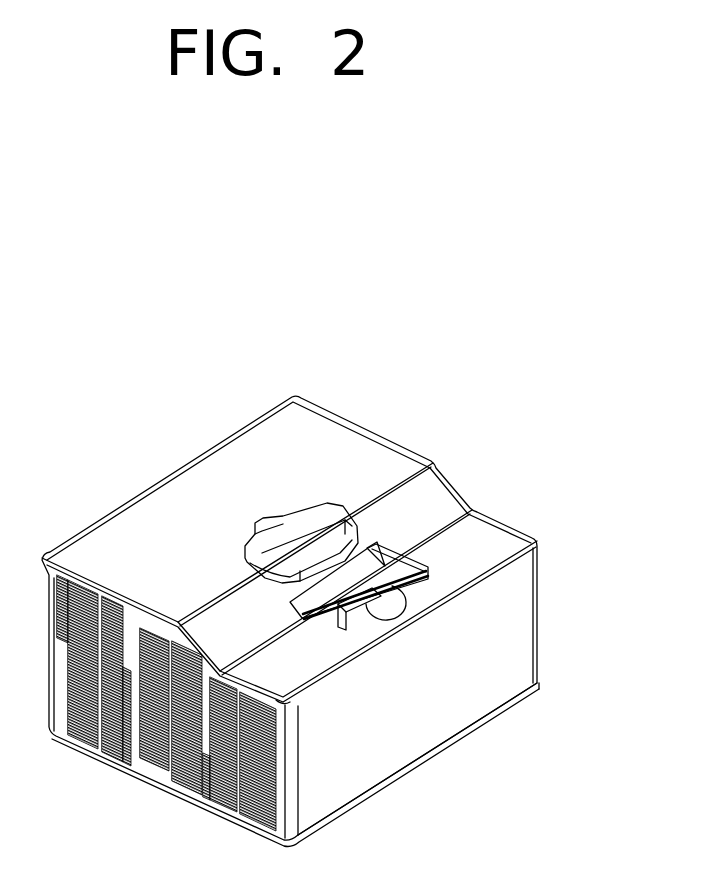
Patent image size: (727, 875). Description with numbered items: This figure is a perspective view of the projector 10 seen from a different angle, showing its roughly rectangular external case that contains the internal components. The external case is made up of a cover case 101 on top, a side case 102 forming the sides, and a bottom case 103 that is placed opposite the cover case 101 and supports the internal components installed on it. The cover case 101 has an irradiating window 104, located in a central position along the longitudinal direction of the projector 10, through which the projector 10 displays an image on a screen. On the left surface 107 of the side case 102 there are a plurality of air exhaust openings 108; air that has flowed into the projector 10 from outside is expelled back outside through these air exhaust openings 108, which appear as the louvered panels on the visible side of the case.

The projector 10 is at (272, 310).
The cover case 101 is at (130, 538).
The side case 102 is at (541, 608).
The bottom case 103 is at (346, 813).
The irradiating window 104 is at (327, 503).
The left surface 107 is at (133, 722).
The air exhaust openings 108 is at (231, 776).